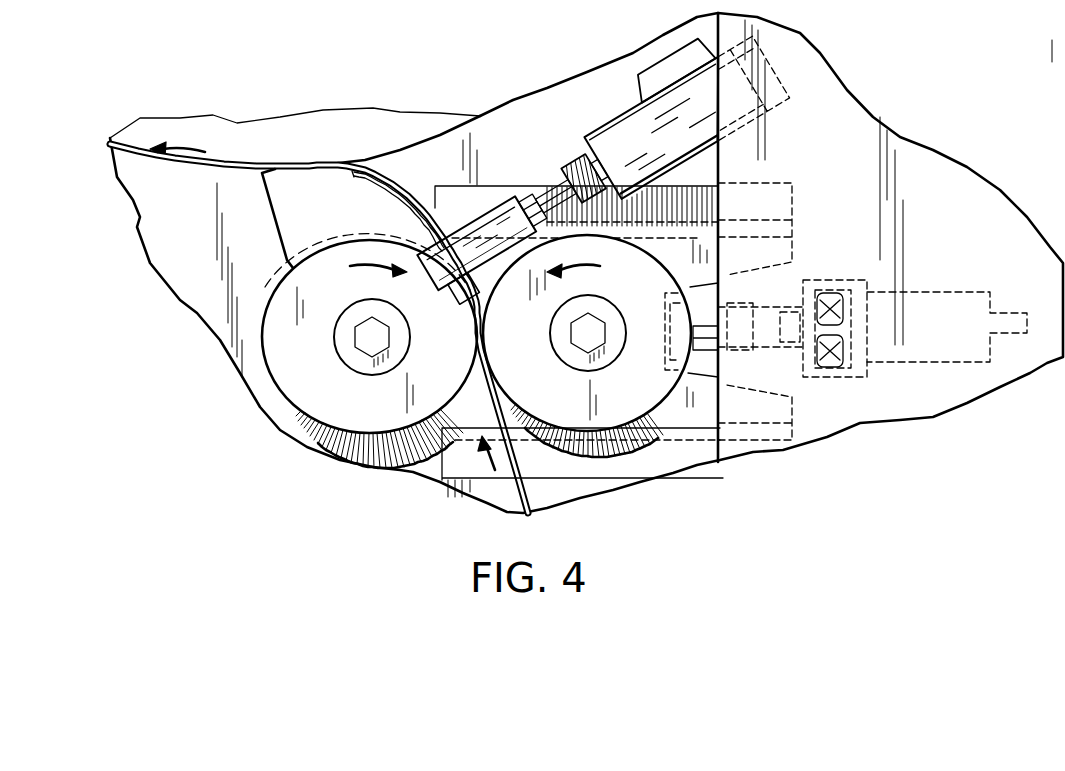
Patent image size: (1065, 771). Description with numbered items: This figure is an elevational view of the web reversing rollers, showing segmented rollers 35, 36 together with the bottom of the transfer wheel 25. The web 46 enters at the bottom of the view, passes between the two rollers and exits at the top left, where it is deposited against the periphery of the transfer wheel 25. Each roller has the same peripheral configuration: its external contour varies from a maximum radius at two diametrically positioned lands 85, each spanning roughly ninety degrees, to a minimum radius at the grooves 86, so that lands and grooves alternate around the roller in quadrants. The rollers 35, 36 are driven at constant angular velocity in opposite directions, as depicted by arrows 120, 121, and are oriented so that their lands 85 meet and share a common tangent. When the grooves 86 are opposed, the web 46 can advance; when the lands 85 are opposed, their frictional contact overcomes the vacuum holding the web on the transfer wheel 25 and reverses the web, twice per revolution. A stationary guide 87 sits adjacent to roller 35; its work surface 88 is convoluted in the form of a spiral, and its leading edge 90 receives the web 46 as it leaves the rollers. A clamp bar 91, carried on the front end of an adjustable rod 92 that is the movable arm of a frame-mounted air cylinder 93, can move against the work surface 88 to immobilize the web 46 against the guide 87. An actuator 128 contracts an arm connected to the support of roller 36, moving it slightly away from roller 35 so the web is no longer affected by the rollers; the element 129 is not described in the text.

The transfer wheel 25 is at (180, 118).
The web 46 is at (110, 143).
The work surface 88 is at (352, 170).
The stationary guide 87 is at (325, 216).
The segmented roller 35 is at (369, 354).
The segmented roller 36 is at (600, 346).
The land 85 is at (275, 387).
The groove 86 is at (370, 440).
The arrow 121 is at (374, 265).
The arrow 120 is at (600, 266).
The leading edge 90 is at (457, 297).
The clamp bar 91 is at (477, 222).
The adjustable rod 92 is at (557, 185).
The air cylinder 93 is at (627, 117).
The bearing 129 is at (803, 330).
The actuator 128 is at (922, 345).